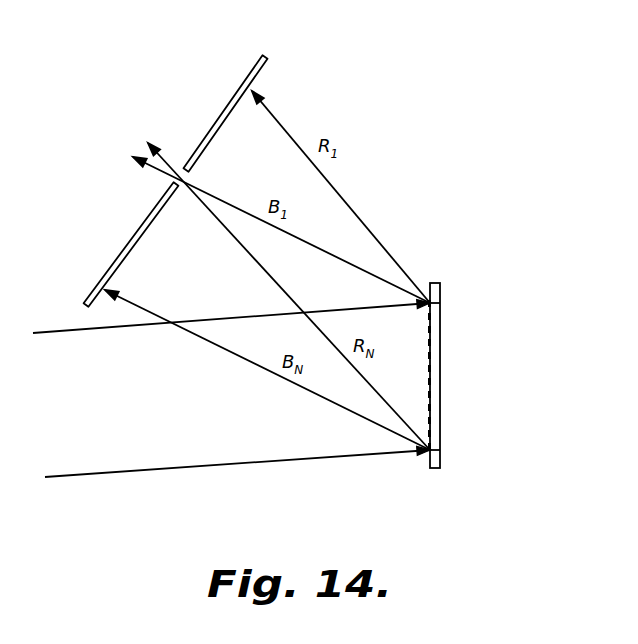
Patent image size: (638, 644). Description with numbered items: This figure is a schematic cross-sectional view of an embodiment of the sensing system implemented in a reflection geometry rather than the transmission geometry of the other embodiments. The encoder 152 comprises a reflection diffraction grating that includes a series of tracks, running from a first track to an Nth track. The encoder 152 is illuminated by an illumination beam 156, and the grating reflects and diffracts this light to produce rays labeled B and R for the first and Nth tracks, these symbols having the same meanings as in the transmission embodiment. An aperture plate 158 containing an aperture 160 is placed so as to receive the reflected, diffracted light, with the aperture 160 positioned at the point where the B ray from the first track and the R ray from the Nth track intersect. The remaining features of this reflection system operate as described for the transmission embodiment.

The encoder 152 is at (434, 283).
The illumination beam 156 is at (193, 467).
The aperture plate 158 is at (265, 59).
The aperture 160 is at (181, 166).